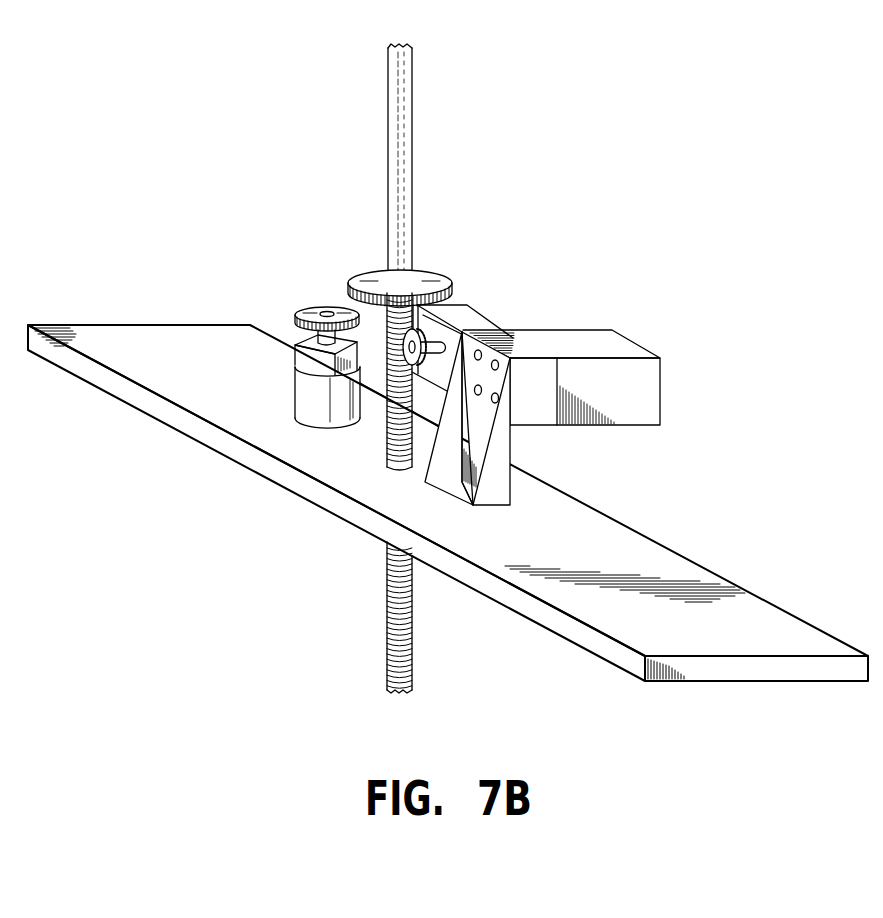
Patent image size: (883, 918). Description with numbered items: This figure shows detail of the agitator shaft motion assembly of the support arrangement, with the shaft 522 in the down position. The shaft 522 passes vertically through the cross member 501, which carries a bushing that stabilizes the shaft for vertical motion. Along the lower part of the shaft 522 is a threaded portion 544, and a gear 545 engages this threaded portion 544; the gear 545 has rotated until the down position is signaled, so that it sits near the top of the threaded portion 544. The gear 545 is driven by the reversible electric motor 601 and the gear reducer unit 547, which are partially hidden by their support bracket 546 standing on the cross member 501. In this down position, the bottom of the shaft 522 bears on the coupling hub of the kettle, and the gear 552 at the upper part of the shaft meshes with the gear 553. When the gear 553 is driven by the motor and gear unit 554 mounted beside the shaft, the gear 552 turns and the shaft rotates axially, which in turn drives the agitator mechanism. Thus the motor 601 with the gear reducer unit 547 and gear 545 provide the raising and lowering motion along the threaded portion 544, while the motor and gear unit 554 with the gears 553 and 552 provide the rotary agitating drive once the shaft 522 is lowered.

The cross member 501 is at (176, 324).
The shaft 522 is at (405, 185).
The threaded portion 544 is at (385, 608).
The gear 545 is at (421, 326).
The support bracket 546 is at (498, 463).
The gear reducer unit 547 is at (515, 333).
The gear 552 is at (431, 268).
The gear 553 is at (327, 305).
The motor and gear unit 554 is at (302, 380).
The reversible electric motor 601 is at (622, 345).